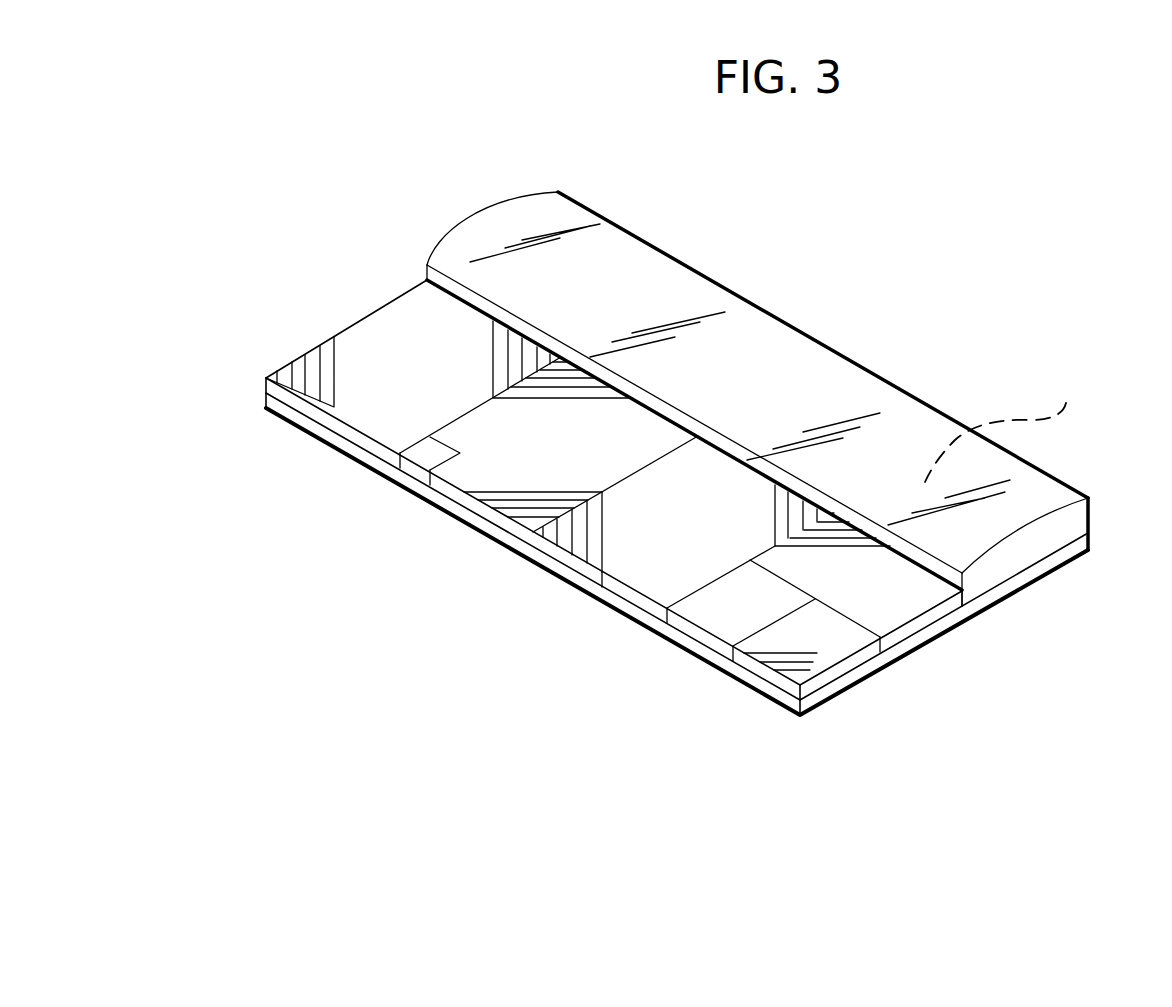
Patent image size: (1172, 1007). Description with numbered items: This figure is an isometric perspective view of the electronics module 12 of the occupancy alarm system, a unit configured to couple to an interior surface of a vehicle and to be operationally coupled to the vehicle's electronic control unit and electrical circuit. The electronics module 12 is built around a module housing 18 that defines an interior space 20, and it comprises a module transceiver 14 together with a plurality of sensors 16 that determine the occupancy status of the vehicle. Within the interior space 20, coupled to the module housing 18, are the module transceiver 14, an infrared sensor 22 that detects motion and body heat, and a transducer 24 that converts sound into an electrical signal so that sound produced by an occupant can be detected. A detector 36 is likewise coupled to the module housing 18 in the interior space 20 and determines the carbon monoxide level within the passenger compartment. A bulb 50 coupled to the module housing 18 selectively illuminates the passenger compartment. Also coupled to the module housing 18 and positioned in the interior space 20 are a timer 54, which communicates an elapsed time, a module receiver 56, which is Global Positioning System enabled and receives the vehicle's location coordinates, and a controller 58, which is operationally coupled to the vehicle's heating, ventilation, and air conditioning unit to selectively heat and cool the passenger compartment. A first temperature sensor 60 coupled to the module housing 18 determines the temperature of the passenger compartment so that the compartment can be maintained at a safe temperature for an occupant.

The electronics module 12 is at (992, 270).
The module transceiver 14 is at (720, 618).
The plurality of sensors 16 is at (695, 492).
The module housing 18 is at (1043, 468).
The interior space 20 is at (1007, 423).
The infrared sensor 22 is at (655, 565).
The transducer 24 is at (617, 548).
The detector 36 is at (378, 398).
The bulb 50 is at (855, 362).
The timer 54 is at (893, 607).
The module receiver 56 is at (817, 655).
The controller 58 is at (538, 473).
The first temperature sensor 60 is at (427, 455).